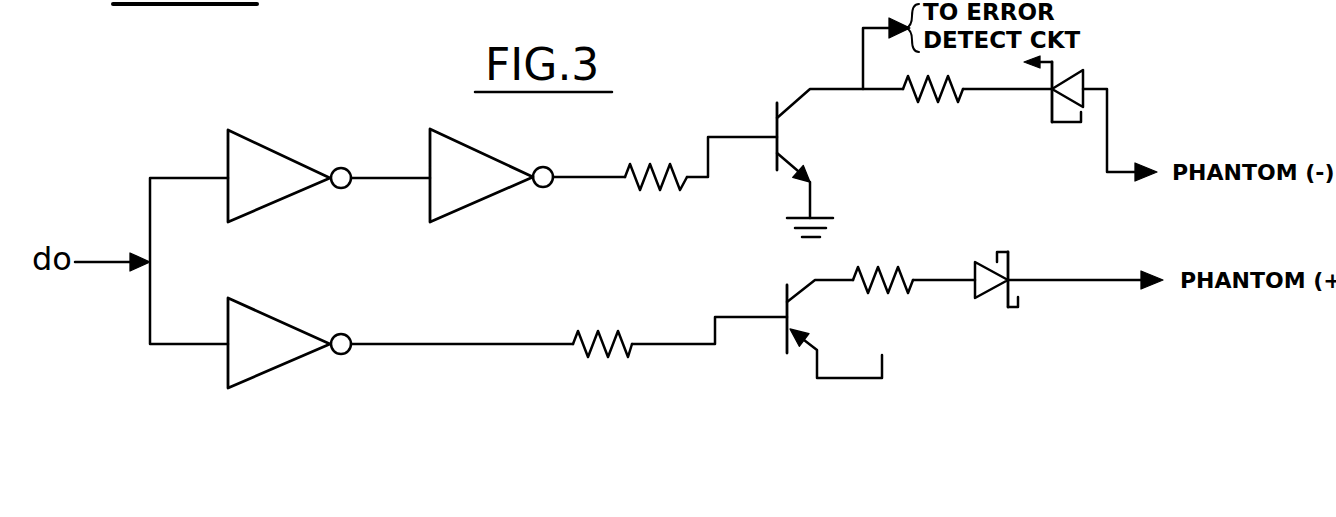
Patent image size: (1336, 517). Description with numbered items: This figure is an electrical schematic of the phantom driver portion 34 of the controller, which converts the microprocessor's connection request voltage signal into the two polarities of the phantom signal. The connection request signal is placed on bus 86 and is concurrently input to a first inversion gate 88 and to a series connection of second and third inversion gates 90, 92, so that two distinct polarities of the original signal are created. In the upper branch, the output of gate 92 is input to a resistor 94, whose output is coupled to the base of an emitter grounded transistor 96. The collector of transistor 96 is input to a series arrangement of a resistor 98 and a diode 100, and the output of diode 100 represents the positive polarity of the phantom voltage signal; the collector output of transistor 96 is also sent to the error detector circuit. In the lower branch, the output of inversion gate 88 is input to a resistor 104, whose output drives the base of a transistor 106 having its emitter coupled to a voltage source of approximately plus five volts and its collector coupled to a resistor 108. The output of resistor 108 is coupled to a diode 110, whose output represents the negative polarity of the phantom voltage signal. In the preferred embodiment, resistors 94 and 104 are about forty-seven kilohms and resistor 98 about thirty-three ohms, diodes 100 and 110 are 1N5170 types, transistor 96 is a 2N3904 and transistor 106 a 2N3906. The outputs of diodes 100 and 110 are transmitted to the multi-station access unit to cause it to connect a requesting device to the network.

The phantom driver portion 34 is at (1214, 58).
The bus 86 is at (93, 263).
The first inversion gate 88 is at (280, 318).
The second inversion gate 90 is at (283, 150).
The third inversion gate 92 is at (483, 152).
The resistor 94 is at (651, 166).
The transistor 96 is at (777, 115).
The resistor 98 is at (936, 100).
The diode 100 is at (1083, 69).
The resistor 104 is at (618, 322).
The transistor 106 is at (783, 328).
The resistor 108 is at (897, 270).
The diode 110 is at (1012, 252).